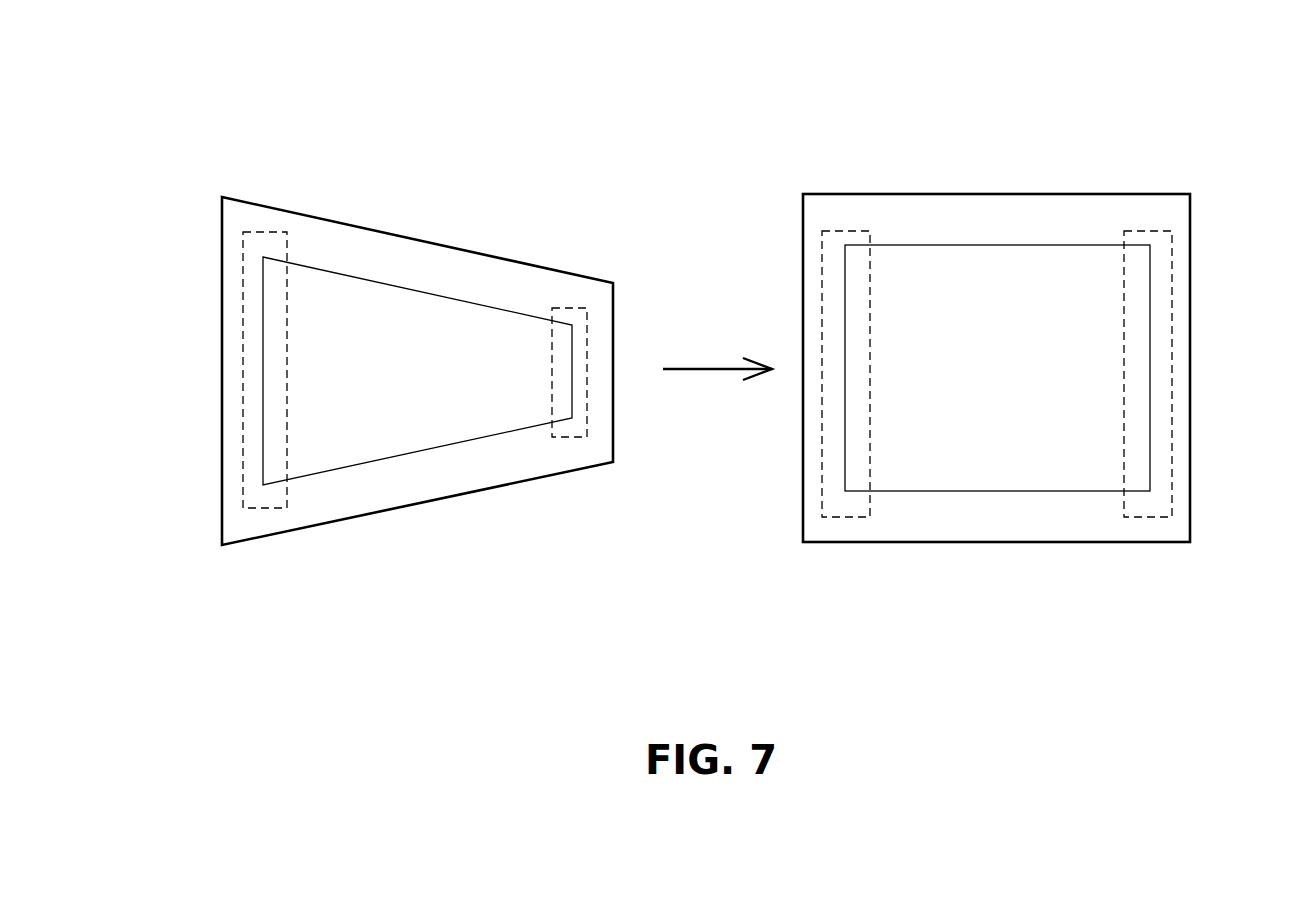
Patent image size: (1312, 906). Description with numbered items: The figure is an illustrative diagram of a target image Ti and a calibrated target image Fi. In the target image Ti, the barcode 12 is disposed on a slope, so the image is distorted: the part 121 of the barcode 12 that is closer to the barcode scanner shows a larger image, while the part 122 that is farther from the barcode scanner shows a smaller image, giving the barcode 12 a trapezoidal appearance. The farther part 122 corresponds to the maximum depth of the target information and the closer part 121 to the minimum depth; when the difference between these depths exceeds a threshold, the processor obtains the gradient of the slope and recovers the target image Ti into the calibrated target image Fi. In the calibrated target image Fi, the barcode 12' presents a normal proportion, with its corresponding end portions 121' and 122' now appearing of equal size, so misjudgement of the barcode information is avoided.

The target image Ti is at (252, 135).
The calibrated target image Fi is at (1190, 135).
The barcode 12 is at (417, 418).
The part of the barcode closer to the barcode scanner 121 is at (263, 426).
The part of the barcode farther from the barcode scanner 122 is at (574, 430).
The barcode in the calibrated target image 12' is at (997, 432).
The first edge region in output image 121' is at (848, 426).
The second edge region in output image 122' is at (1149, 426).